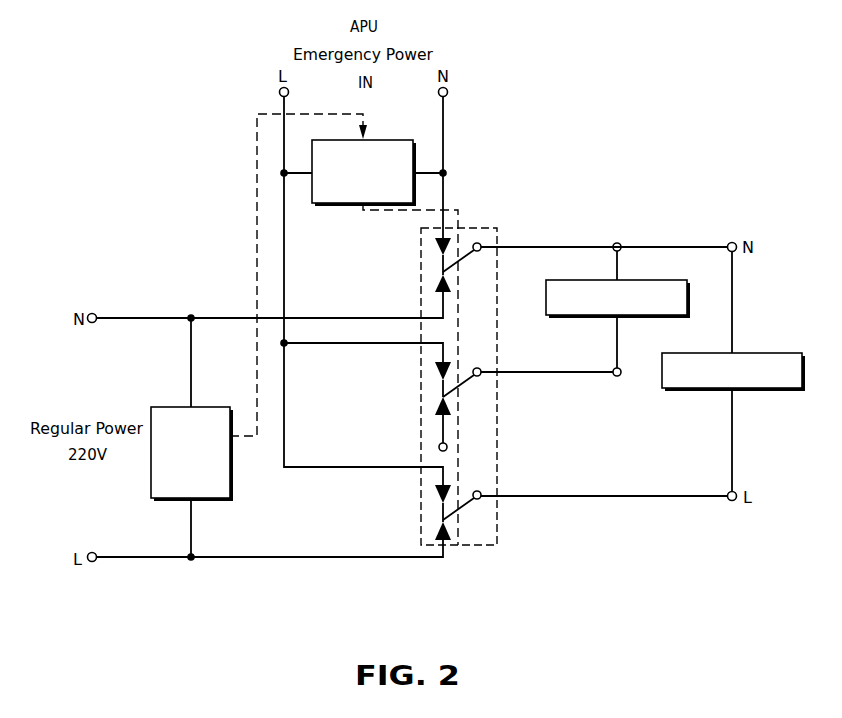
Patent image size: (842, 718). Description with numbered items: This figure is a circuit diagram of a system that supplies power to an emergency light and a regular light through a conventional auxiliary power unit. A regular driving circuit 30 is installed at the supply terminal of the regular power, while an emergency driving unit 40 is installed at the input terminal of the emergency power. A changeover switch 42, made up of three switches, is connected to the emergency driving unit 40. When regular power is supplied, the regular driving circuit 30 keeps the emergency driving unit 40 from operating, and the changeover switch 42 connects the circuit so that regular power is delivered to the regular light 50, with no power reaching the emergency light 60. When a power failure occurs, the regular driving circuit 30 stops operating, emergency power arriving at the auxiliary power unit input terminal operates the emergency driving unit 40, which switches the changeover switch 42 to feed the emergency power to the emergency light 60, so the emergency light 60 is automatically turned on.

The regular driving circuit 30 is at (205, 405).
The emergency driving unit 40 is at (378, 139).
The changeover switch 42 is at (462, 228).
The regular light 50 is at (748, 352).
The emergency light 60 is at (630, 277).